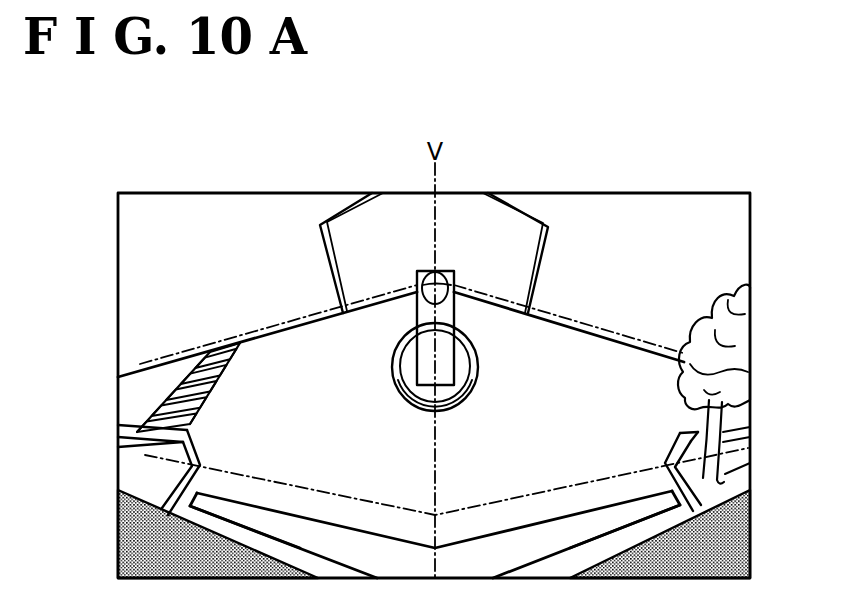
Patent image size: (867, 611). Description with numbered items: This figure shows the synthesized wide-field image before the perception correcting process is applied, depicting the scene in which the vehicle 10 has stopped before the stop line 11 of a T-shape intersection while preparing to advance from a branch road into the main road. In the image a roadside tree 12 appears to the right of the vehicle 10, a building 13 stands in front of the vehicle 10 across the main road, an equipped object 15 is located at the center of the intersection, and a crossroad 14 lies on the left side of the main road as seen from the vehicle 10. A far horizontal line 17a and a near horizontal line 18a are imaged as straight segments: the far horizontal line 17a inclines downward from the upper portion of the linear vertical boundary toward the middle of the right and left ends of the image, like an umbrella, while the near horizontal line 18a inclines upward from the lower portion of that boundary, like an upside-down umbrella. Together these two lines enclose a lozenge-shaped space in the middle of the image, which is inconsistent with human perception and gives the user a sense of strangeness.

The vehicle 10 is at (222, 553).
The stop line 11 is at (322, 530).
The roadside tree 12 is at (688, 386).
The building 13 is at (332, 246).
The crossroad 14 is at (220, 387).
The equipped object 15 is at (447, 313).
The far horizontal line 17a is at (565, 318).
The near horizontal line 18a is at (478, 508).